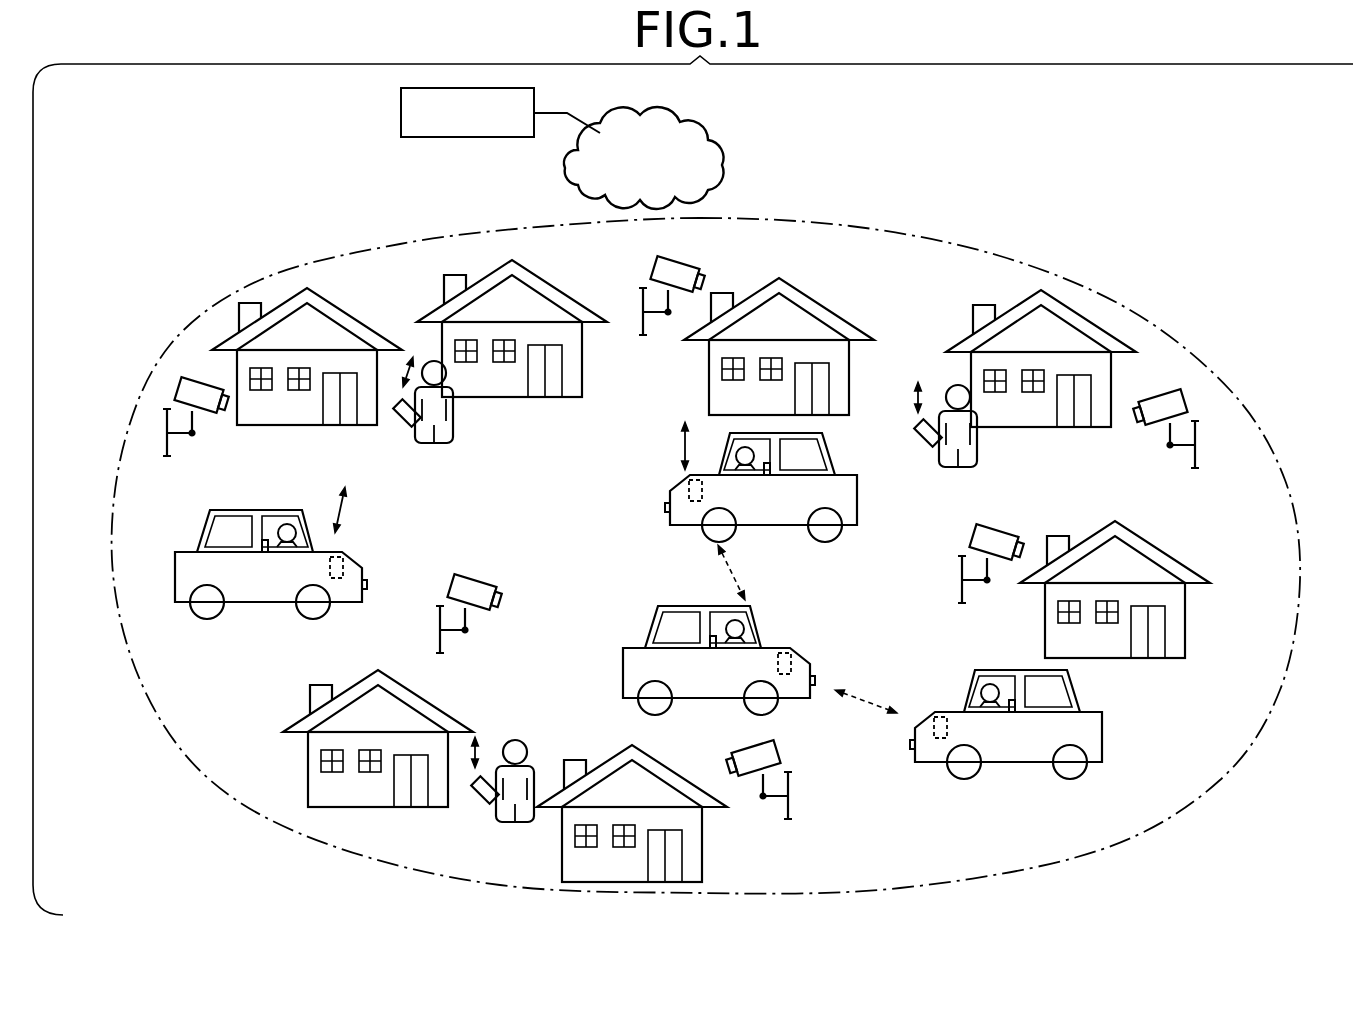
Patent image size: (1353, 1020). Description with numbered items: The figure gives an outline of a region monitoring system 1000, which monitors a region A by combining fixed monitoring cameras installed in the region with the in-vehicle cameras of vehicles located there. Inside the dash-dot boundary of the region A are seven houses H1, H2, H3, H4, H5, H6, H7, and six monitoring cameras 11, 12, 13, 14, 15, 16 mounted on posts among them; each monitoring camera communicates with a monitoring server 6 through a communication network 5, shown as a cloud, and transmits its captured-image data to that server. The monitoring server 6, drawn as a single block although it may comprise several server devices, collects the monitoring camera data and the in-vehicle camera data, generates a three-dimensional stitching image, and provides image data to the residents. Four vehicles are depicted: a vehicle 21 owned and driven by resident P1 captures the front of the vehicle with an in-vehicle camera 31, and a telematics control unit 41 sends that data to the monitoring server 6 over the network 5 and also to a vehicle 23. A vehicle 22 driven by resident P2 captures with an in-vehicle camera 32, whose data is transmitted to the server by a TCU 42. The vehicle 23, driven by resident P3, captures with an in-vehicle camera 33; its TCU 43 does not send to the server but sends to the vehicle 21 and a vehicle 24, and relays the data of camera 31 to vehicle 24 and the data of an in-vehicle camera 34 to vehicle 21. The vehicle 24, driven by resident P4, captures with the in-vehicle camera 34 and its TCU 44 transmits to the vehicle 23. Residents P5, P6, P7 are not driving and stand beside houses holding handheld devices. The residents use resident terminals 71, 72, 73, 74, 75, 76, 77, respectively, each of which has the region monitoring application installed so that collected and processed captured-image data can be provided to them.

The region monitoring system 1000 is at (1153, 131).
The communication network 5 is at (650, 112).
The monitoring server 6 is at (401, 108).
The region A is at (960, 258).
The house H1 is at (1110, 328).
The house H2 is at (800, 294).
The house H3 is at (530, 274).
The house H4 is at (330, 302).
The house H5 is at (420, 695).
The house H6 is at (703, 845).
The house H7 is at (1135, 530).
The monitoring camera 11 is at (1160, 390).
The monitoring camera 12 is at (680, 262).
The monitoring camera 13 is at (198, 385).
The monitoring camera 14 is at (488, 580).
The monitoring camera 15 is at (972, 528).
The monitoring camera 16 is at (778, 748).
The vehicle 21 is at (857, 508).
The vehicle 22 is at (180, 604).
The vehicle 23 is at (622, 680).
The vehicle 24 is at (1104, 745).
The in-vehicle camera 31 is at (667, 512).
The in-vehicle camera 32 is at (366, 583).
The in-vehicle camera 33 is at (815, 677).
The in-vehicle camera 34 is at (910, 745).
The telematics control unit 41 is at (704, 490).
The telematics control unit 42 is at (328, 563).
The telematics control unit 43 is at (777, 660).
The telematics control unit 44 is at (949, 725).
The resident terminal 71 is at (772, 476).
The resident terminal 72 is at (262, 547).
The resident terminal 73 is at (708, 643).
The resident terminal 74 is at (1017, 705).
The resident terminal 75 is at (928, 445).
The resident terminal 76 is at (405, 425).
The resident terminal 77 is at (487, 797).
The resident P1 is at (738, 452).
The resident P2 is at (290, 522).
The resident P3 is at (748, 625).
The resident P4 is at (990, 688).
The resident P5 is at (978, 430).
The resident P6 is at (455, 408).
The resident P7 is at (528, 766).